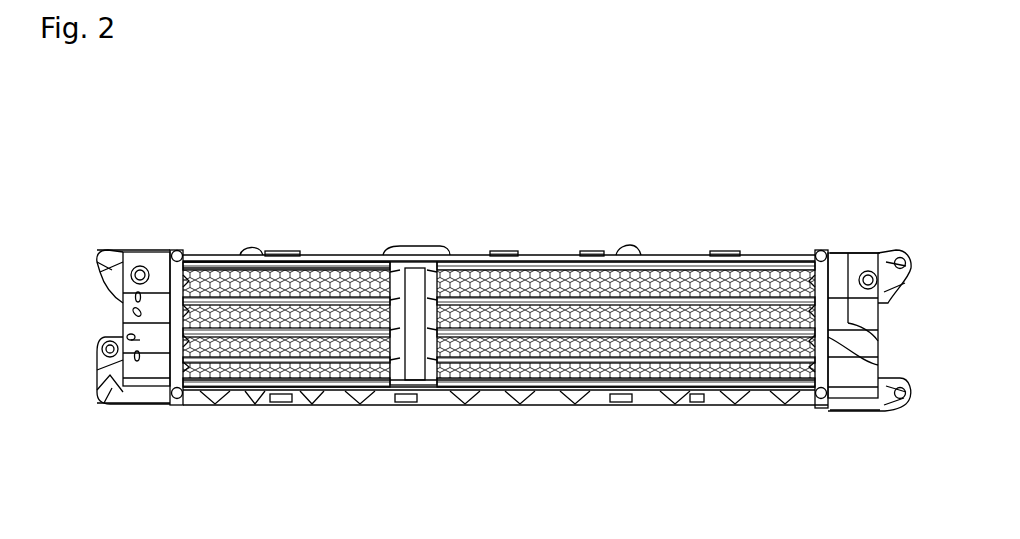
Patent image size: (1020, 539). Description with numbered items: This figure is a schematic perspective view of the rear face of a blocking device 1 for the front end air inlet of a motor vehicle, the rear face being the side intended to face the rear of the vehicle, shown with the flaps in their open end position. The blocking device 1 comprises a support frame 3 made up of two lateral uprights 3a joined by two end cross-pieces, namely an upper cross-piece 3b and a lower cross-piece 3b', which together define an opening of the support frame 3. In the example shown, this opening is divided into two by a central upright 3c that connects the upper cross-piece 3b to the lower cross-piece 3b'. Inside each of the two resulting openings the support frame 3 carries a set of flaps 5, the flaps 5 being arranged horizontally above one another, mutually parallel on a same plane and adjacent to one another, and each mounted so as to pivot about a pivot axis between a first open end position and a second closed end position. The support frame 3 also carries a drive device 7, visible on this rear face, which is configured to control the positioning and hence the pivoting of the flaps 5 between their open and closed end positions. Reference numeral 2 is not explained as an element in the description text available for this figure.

The blocking device 1 is at (168, 172).
The heat exchanger core / tube block 2 is at (673, 297).
The support frame 3 is at (762, 252).
The lateral uprights 3a is at (123, 337).
The upper cross-piece 3b is at (598, 194).
The lower cross-piece 3b' is at (505, 431).
The central upright 3c is at (419, 300).
The flaps 5 is at (545, 283).
The drive device 7 is at (388, 250).